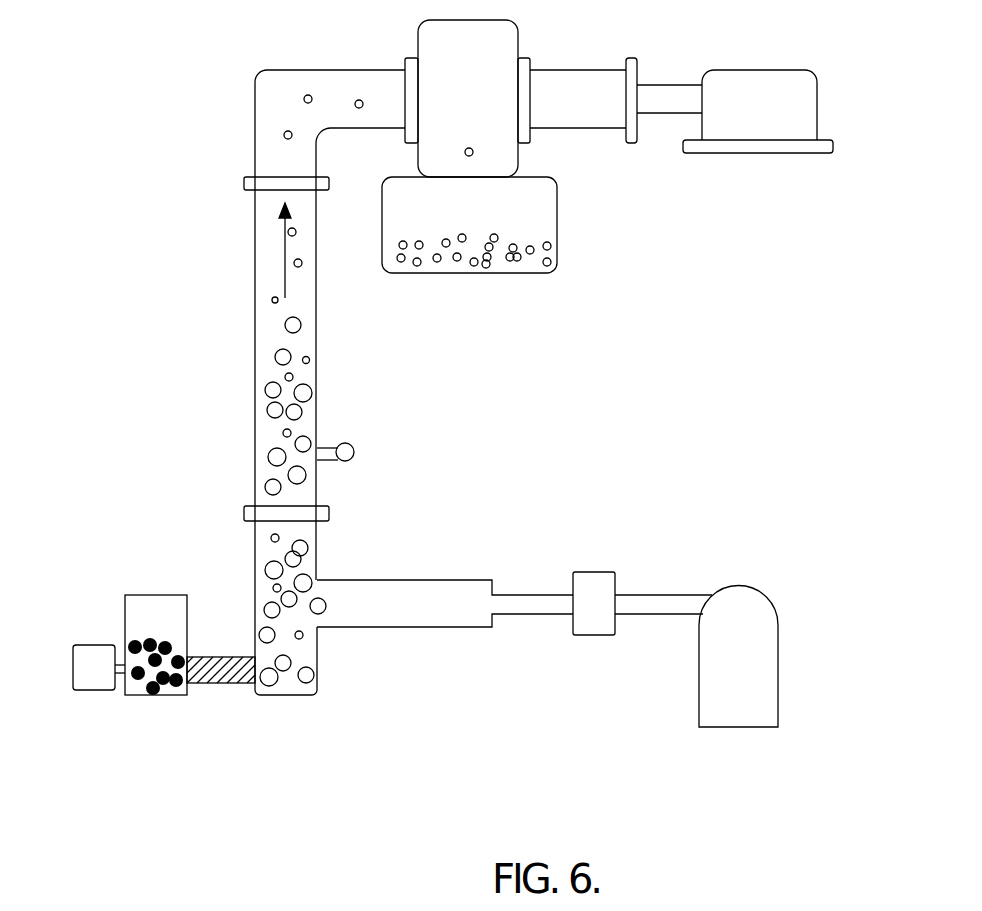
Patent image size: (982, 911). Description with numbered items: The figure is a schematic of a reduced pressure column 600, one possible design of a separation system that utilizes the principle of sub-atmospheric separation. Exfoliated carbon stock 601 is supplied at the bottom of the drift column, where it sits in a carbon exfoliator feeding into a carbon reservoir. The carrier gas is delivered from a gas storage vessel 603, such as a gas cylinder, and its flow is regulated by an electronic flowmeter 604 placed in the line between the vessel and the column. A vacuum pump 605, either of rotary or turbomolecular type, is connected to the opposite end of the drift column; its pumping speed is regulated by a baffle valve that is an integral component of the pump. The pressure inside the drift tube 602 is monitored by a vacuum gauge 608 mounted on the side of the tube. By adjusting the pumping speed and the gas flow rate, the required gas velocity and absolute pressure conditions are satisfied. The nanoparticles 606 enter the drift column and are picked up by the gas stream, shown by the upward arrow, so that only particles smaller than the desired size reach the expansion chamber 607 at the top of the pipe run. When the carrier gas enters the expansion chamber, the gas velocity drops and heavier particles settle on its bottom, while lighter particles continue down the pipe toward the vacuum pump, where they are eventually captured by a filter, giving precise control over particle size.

The reduced pressure column 600 is at (460, 401).
The exfoliated carbon stock 601 is at (150, 695).
The drift tube 602 is at (255, 348).
The gas storage vessel 603 is at (742, 583).
The electronic flowmeter 604 is at (592, 570).
The vacuum pump 605 is at (817, 94).
The nanoparticles 606 is at (495, 237).
The collection chamber 607 is at (460, 275).
The vacuum gauge 608 is at (355, 463).